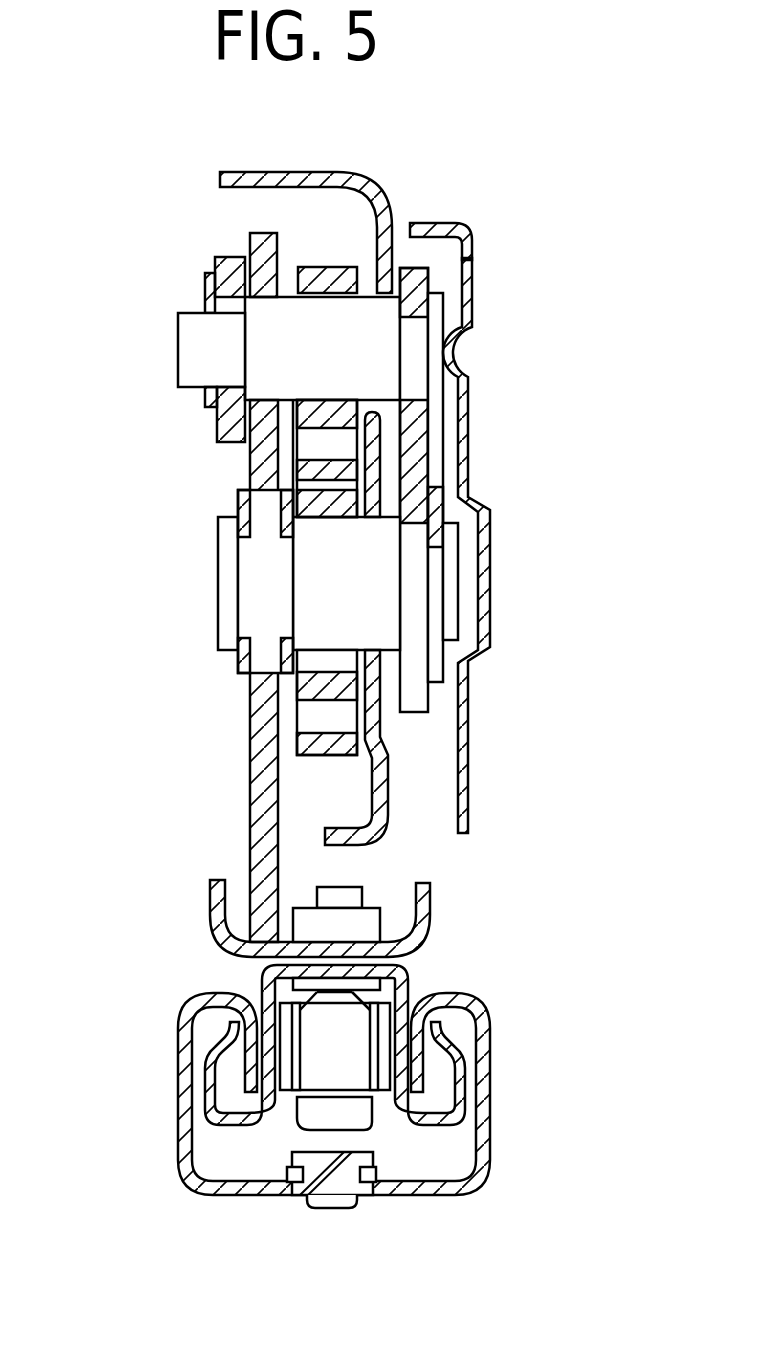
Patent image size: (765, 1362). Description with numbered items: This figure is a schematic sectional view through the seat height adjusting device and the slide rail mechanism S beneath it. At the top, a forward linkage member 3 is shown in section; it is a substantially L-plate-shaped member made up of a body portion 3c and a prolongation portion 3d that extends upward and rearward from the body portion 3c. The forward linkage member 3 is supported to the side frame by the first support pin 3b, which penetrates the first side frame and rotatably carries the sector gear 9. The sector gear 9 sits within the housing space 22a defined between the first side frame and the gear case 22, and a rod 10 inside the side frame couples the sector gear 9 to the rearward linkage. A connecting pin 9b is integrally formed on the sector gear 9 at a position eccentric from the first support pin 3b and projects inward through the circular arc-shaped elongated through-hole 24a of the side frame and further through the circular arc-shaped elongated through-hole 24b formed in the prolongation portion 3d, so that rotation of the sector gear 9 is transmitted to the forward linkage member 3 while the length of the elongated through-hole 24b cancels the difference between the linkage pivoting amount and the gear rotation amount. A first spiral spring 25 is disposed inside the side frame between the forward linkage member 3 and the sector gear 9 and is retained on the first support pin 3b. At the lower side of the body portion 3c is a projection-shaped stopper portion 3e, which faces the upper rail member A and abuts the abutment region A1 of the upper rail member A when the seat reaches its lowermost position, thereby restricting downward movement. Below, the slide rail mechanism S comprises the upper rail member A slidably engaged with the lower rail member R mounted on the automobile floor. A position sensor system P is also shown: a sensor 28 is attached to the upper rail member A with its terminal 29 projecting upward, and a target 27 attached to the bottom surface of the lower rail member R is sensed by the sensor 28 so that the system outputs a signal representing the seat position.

The elongated through-hole 24b is at (272, 317).
The elongated through-hole 24a is at (377, 317).
The housing space 22a is at (433, 253).
The gear case 22 is at (472, 280).
The prolongation portion 3d is at (250, 240).
The sector gear 9 is at (428, 447).
The connecting pin 9b is at (178, 347).
The rod 10 is at (227, 442).
The forward linkage member 3 is at (250, 708).
The body portion 3c is at (250, 770).
The first spiral spring 25 is at (320, 758).
The first support pin 3b is at (218, 565).
The stopper portion 3e is at (250, 930).
The terminal 29 is at (347, 887).
The upper rail member A is at (243, 948).
The abutment region A1 is at (260, 957).
The slide rail mechanism S is at (435, 983).
The sensor 28 is at (345, 1043).
The lower rail member R is at (178, 1150).
The target 27 is at (333, 1208).
The position sensor system P is at (415, 1170).